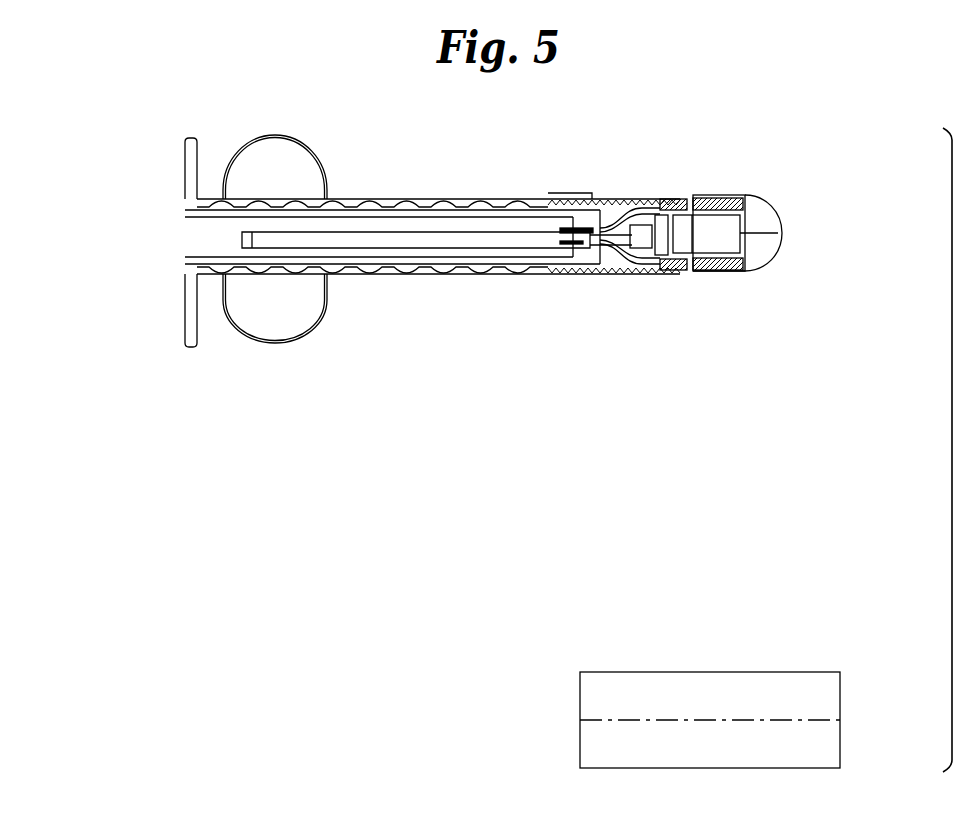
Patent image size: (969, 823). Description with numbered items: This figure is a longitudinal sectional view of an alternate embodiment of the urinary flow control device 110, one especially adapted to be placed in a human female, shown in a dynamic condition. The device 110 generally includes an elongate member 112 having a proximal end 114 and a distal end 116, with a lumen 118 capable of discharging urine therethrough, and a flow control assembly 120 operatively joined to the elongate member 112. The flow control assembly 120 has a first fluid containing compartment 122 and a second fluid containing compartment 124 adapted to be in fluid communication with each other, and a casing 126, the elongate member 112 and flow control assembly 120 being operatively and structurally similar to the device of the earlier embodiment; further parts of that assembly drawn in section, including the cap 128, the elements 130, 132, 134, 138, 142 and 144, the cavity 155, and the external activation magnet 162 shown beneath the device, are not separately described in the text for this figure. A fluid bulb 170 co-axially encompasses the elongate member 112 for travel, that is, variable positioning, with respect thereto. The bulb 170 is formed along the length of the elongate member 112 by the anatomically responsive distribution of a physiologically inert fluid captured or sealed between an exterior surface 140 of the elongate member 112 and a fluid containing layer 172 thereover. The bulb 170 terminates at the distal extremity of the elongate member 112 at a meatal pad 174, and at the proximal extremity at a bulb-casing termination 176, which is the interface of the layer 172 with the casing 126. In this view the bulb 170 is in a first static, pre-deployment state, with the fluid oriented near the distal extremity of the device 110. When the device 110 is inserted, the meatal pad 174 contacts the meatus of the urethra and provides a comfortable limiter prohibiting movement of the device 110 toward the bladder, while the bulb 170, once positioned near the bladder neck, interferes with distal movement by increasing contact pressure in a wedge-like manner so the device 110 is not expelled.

The urinary flow control device 110 is at (135, 165).
The elongate member 112 is at (423, 310).
The proximal end 114 is at (557, 192).
The distal end 116 is at (212, 175).
The lumen 118 is at (382, 262).
The flow control assembly 120 is at (765, 275).
The first fluid containing compartment 122 is at (640, 210).
The second fluid containing compartment 124 is at (506, 250).
The casing 126 is at (553, 277).
The distal cap 128 is at (728, 195).
The upper flared guide 130 is at (610, 210).
The lens tip 132 is at (768, 223).
The lower flared guide 134 is at (617, 270).
The connector block 138 is at (607, 270).
The exterior surface 140 is at (456, 262).
The coupling member 142 is at (593, 270).
The rod coupling 144 is at (530, 228).
The cap insulating band 155 is at (740, 215).
The external magnet 162 is at (853, 718).
The fluid bulb 170 is at (298, 184).
The fluid containing layer 172 is at (355, 198).
The meatal pad 174 is at (190, 317).
The bulb-casing termination 176 is at (550, 202).